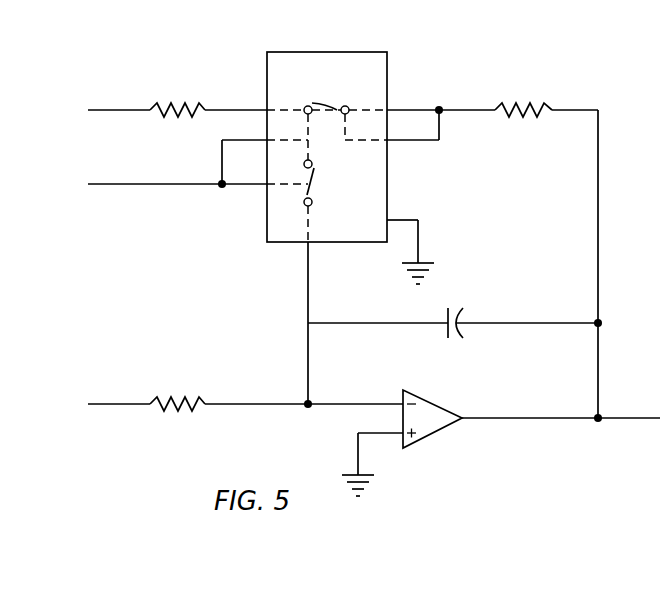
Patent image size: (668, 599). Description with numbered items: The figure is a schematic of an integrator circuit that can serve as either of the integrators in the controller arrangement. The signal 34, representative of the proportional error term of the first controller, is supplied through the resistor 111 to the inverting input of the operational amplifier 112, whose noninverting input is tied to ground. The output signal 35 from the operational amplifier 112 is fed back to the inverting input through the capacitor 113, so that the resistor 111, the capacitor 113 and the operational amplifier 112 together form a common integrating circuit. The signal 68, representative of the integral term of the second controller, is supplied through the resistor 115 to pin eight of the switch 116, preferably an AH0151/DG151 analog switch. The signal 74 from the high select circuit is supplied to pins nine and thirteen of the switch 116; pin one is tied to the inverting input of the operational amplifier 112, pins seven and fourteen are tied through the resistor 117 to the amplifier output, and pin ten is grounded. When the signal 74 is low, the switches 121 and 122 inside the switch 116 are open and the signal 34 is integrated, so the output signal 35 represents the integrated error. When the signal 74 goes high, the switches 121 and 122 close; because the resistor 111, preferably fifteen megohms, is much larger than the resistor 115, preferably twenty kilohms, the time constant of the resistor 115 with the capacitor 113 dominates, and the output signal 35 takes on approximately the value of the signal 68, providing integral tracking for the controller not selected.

The signal 34 is at (113, 403).
The output signal 35 is at (527, 419).
The signal 68 is at (113, 109).
The signal 74 is at (115, 185).
The resistor 111 is at (176, 397).
The operational amplifier 112 is at (428, 438).
The capacitor 113 is at (460, 338).
The resistor 115 is at (176, 102).
The switch 116 is at (325, 52).
The resistor 117 is at (521, 100).
The switch 121 is at (328, 108).
The switch 122 is at (317, 183).